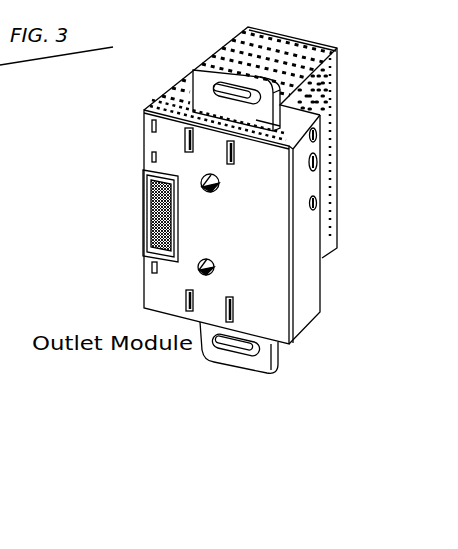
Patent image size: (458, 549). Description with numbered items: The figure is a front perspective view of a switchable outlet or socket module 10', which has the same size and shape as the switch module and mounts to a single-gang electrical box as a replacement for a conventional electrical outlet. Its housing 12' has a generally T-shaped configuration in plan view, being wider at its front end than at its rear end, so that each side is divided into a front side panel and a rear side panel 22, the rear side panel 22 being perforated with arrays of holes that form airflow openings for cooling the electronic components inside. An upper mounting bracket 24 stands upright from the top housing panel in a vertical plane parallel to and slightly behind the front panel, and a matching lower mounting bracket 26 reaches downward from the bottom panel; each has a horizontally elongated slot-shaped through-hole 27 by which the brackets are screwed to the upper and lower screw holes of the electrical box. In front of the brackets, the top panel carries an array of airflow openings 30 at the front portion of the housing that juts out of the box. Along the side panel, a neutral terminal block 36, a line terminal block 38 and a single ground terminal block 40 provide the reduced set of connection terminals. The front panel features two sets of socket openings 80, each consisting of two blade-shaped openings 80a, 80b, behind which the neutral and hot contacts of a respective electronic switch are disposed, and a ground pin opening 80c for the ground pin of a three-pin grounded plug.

The switchable outlet or socket module 10' is at (351, 187).
The housing 12' is at (367, 21).
The rear side panel 22 is at (330, 227).
The upper mounting bracket 24 is at (253, 117).
The lower mounting bracket 26 is at (260, 366).
The slot-shaped through-hole 27 is at (222, 93).
The airflow openings 30 is at (163, 100).
The neutral terminal block 36 is at (313, 202).
The line terminal block 38 is at (316, 160).
The ground terminal block 40 is at (316, 135).
The set of socket openings 80 is at (178, 155).
The blade-shaped opening 80a is at (183, 136).
The blade-shaped opening 80b is at (223, 166).
The ground pin opening 80c is at (207, 193).